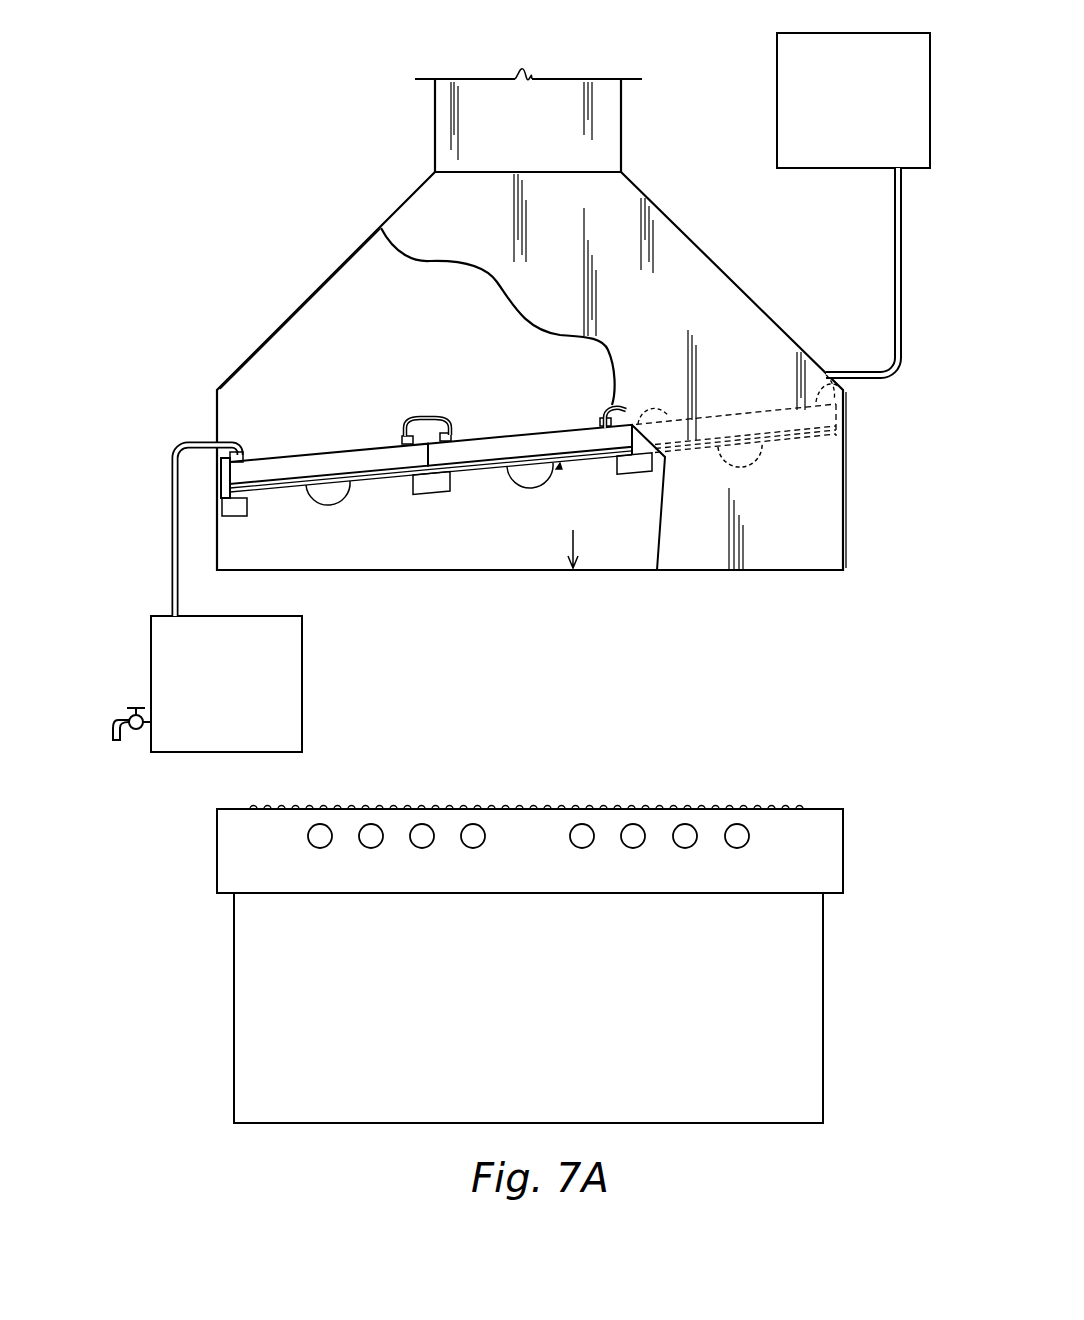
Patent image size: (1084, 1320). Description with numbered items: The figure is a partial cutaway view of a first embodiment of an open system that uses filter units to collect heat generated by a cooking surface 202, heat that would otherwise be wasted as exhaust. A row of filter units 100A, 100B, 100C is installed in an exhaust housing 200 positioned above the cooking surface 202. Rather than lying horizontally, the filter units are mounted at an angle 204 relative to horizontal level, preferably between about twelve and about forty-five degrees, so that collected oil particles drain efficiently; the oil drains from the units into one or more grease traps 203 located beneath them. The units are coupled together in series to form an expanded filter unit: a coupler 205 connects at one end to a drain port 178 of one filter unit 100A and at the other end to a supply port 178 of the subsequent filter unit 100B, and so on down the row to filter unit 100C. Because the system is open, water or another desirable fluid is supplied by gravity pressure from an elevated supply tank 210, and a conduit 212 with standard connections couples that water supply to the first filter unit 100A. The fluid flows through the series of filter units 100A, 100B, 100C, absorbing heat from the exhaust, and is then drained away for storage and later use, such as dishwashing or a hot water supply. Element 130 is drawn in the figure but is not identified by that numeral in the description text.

The exhaust housing 200 is at (612, 305).
The elevated supply tank 210 is at (833, 113).
The conduit 212 is at (893, 282).
The drain port / supply port 178 is at (240, 452).
The coupler 205 is at (424, 418).
The first filter unit 100A is at (745, 420).
The subsequent filter unit 100B is at (525, 437).
The filter unit 100C is at (311, 470).
The grease trap 203 is at (237, 503).
The lamp / light source 130 is at (328, 497).
The angle 204 is at (560, 466).
The cooking surface 202 is at (603, 808).